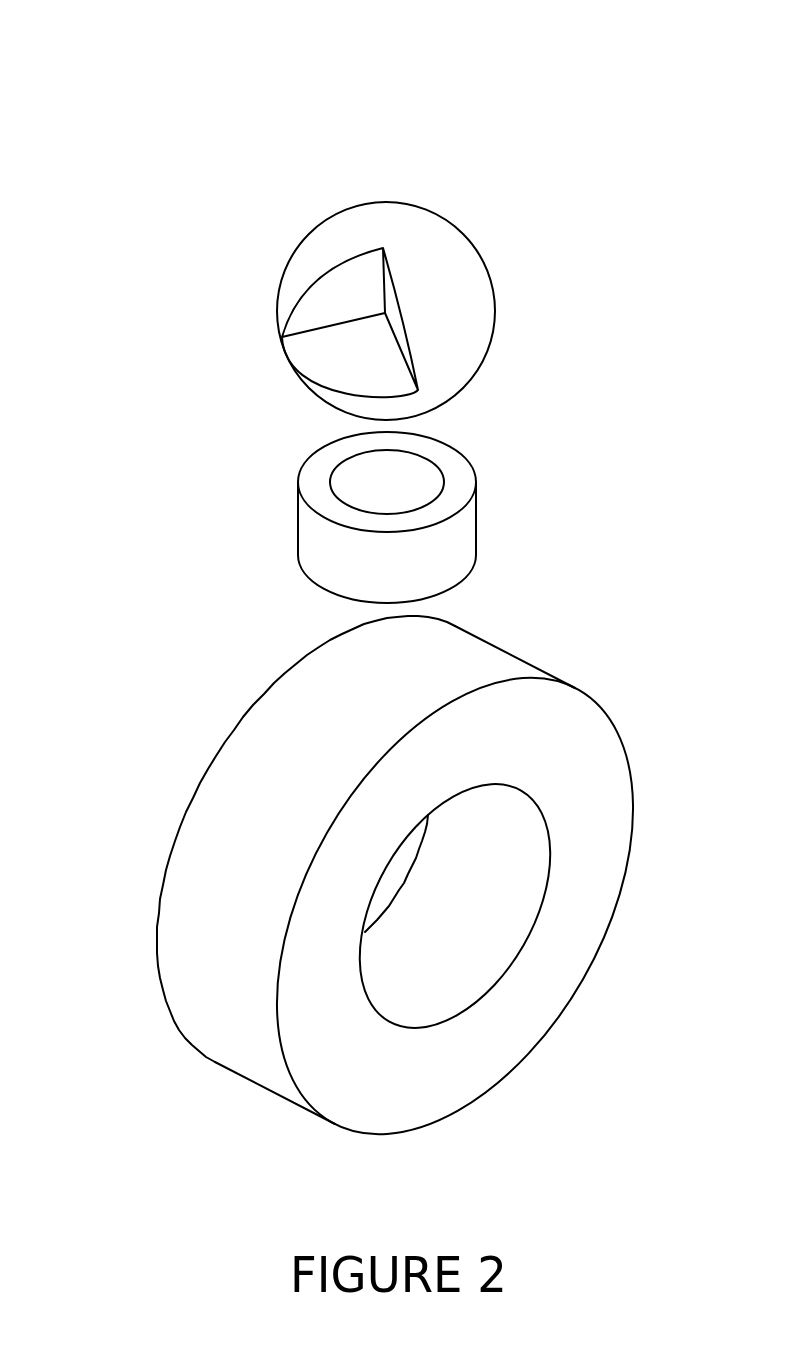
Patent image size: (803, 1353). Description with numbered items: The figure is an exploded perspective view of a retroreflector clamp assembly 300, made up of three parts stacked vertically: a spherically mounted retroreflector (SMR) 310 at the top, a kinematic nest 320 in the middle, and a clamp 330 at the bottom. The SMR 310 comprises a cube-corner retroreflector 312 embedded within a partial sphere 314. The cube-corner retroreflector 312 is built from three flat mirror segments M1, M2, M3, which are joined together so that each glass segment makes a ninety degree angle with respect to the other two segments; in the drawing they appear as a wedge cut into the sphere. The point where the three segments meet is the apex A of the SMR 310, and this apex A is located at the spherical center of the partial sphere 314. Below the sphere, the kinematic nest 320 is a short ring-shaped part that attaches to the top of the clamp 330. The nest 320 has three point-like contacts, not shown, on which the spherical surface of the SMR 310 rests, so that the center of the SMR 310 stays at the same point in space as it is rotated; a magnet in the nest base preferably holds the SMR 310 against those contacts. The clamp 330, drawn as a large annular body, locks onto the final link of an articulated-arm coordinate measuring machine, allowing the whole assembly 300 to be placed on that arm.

The retroreflector clamp assembly 300 is at (198, 62).
The spherically mounted retroreflector (SMR) 310 is at (417, 133).
The cube-corner retroreflector 312 is at (282, 337).
The partial sphere 314 is at (480, 250).
The kinematic nest 320 is at (472, 468).
The clamp 330 is at (500, 645).
The apex A is at (385, 313).
The flat mirror segment M1 is at (325, 309).
The flat mirror segment M2 is at (375, 372).
The flat mirror segment M3 is at (400, 323).